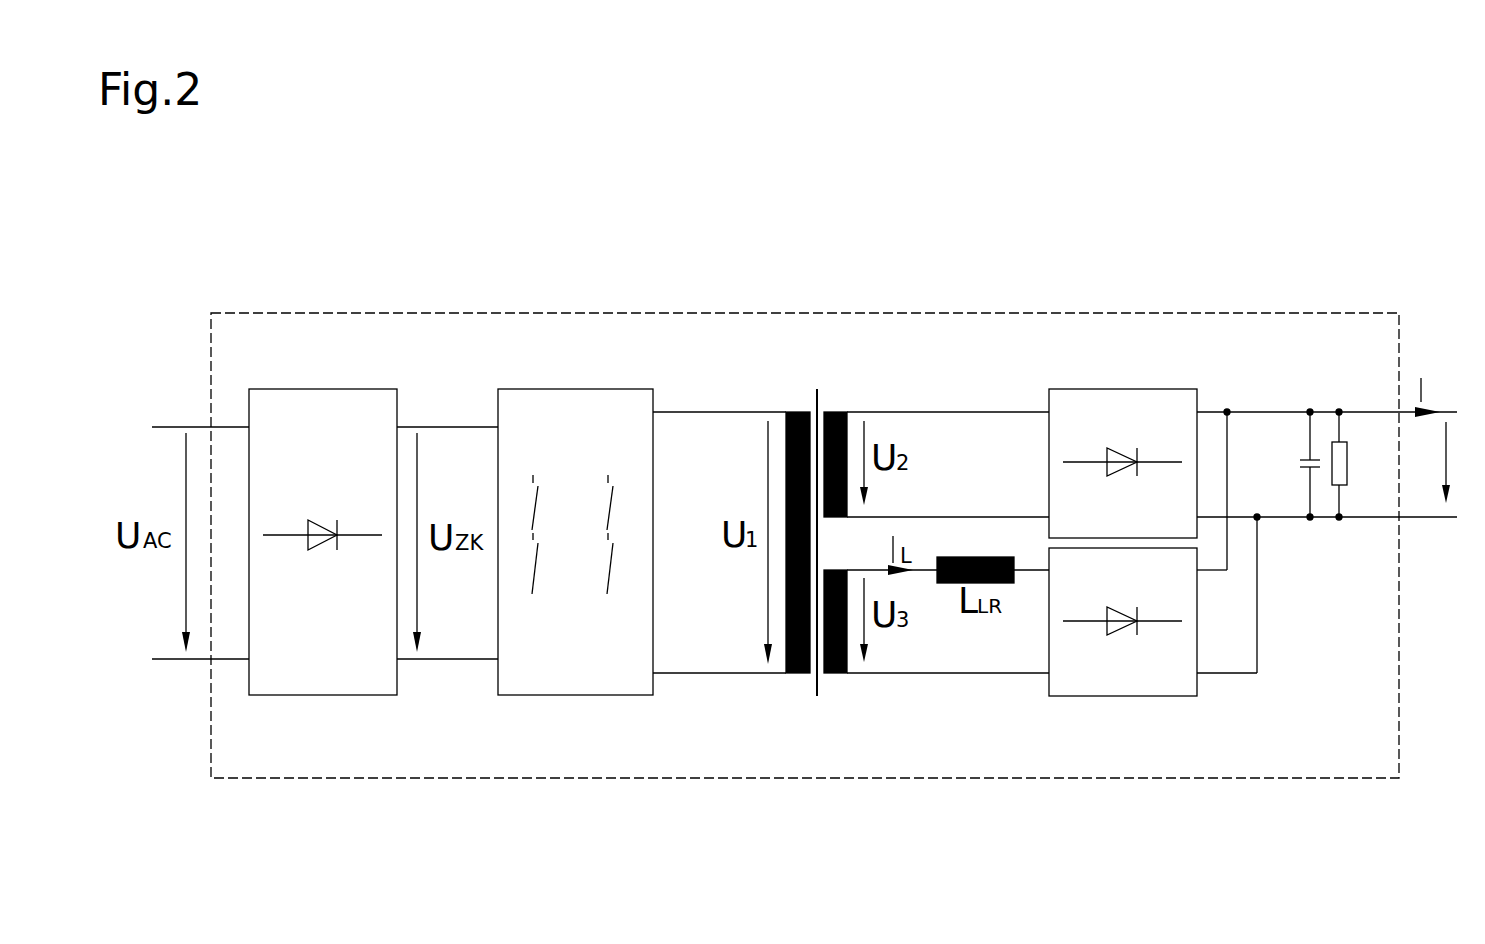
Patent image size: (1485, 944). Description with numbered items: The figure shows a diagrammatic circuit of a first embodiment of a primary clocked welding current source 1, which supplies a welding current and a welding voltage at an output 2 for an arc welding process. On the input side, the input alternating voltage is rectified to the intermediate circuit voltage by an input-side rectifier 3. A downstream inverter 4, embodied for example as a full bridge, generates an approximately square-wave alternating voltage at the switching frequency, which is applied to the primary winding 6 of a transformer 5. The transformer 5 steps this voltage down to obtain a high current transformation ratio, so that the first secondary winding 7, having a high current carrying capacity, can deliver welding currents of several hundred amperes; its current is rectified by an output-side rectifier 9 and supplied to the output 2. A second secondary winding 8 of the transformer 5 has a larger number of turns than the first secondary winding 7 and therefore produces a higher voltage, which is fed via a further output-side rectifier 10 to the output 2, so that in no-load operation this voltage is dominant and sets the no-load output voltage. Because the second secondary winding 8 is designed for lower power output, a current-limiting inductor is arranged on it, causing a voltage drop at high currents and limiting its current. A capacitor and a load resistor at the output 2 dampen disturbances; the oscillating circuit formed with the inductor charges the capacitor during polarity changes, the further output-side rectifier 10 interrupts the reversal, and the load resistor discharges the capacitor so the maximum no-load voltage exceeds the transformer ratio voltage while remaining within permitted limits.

The welding current source 1 is at (492, 237).
The output 2 is at (1413, 490).
The input-side rectifier 3 is at (323, 389).
The inverter 4 is at (553, 389).
The transformer 5 is at (820, 362).
The primary winding 6 is at (797, 412).
The first secondary winding 7 is at (841, 412).
The second secondary winding 8 is at (836, 674).
The output-side rectifier 9 is at (1123, 389).
The further output-side rectifier 10 is at (1122, 696).